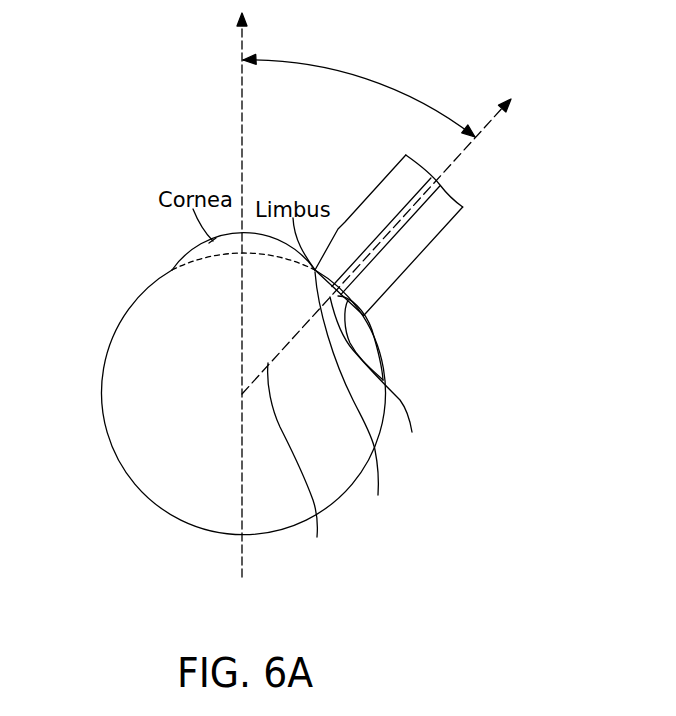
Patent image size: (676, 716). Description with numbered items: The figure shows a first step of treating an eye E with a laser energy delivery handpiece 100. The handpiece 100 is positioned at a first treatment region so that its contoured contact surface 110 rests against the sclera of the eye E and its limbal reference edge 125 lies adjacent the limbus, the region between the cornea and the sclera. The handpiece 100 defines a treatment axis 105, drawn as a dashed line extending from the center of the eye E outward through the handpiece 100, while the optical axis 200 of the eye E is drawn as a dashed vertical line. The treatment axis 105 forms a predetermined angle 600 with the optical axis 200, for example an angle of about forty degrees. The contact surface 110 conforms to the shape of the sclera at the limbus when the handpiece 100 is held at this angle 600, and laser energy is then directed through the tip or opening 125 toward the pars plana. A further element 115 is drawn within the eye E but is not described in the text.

The eye E is at (118, 392).
The optical axis 200 is at (241, 555).
The treatment axis 105 is at (482, 128).
The predetermined angle 600 is at (407, 98).
The laser energy delivery handpiece 100 is at (393, 262).
The contact surface 110 is at (340, 313).
The limbal reference edge 125 is at (381, 379).
The implant 115 is at (359, 397).